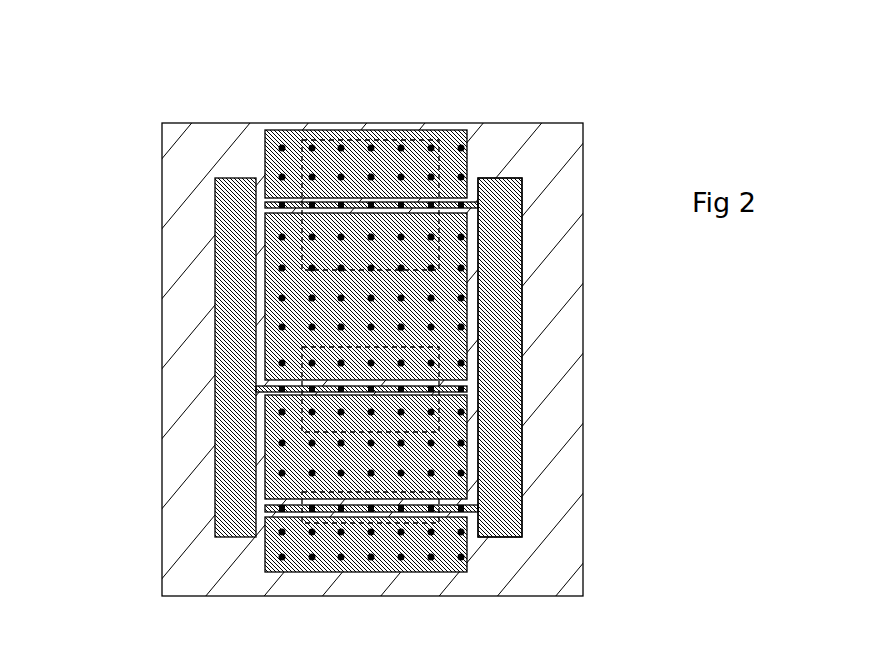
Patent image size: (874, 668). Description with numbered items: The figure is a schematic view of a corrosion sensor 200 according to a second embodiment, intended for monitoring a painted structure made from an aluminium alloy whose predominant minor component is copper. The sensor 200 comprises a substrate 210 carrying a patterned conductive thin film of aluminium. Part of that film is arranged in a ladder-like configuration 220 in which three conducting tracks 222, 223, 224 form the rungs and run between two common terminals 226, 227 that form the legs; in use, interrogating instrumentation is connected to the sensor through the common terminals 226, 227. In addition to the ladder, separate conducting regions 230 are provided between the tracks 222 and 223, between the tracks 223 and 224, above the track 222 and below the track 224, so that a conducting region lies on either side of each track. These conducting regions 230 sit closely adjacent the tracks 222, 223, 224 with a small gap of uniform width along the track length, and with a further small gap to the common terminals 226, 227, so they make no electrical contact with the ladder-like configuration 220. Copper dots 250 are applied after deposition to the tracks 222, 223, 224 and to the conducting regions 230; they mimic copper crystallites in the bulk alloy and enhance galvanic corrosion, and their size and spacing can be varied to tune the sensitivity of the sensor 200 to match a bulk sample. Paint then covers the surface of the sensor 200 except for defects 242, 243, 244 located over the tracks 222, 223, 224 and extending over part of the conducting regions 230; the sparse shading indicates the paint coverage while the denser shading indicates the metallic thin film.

The corrosion sensor 200 is at (595, 83).
The substrate 210 is at (565, 155).
The patterned conductive thin film in ladder-like configuration 220 is at (505, 318).
The conducting track 222 is at (470, 507).
The conducting track 223 is at (467, 392).
The conducting track 224 is at (467, 206).
The common terminal 226 is at (238, 187).
The common terminal 227 is at (501, 200).
The separate conducting region 230 is at (285, 185).
The defect 242 is at (303, 495).
The defect 243 is at (307, 347).
The defect 244 is at (332, 137).
The copper dots 250 is at (285, 531).